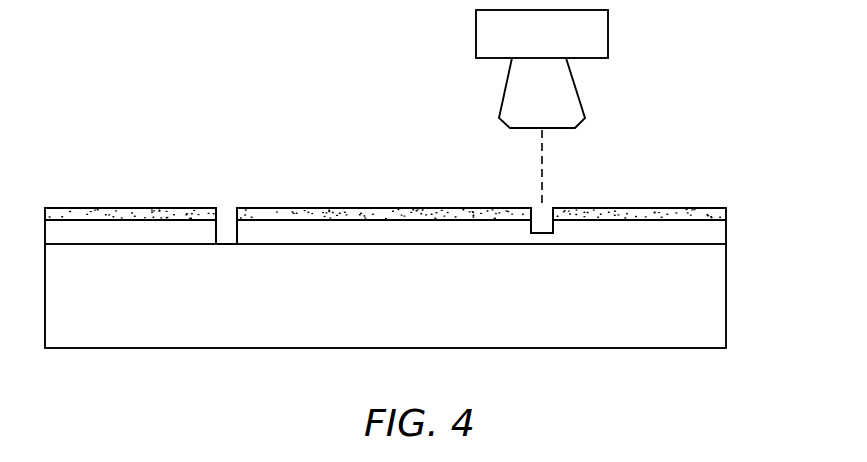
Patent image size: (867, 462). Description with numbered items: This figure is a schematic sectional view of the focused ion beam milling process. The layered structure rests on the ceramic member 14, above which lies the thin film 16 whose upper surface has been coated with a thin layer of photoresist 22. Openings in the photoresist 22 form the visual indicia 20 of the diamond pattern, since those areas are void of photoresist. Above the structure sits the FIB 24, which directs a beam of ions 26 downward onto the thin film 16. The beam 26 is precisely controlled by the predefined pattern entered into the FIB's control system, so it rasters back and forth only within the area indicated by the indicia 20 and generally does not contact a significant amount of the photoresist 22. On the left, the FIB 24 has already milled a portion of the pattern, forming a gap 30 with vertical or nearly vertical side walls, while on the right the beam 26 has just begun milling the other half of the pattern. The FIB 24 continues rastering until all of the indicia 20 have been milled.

The ceramic member 14 is at (702, 322).
The thin film 16 is at (703, 233).
The visual indicia 20 is at (224, 217).
The photoresist 22 is at (588, 208).
The focused ion beam (FIB) 24 is at (578, 31).
The beam of ions 26 is at (543, 157).
The gap 30 is at (225, 233).